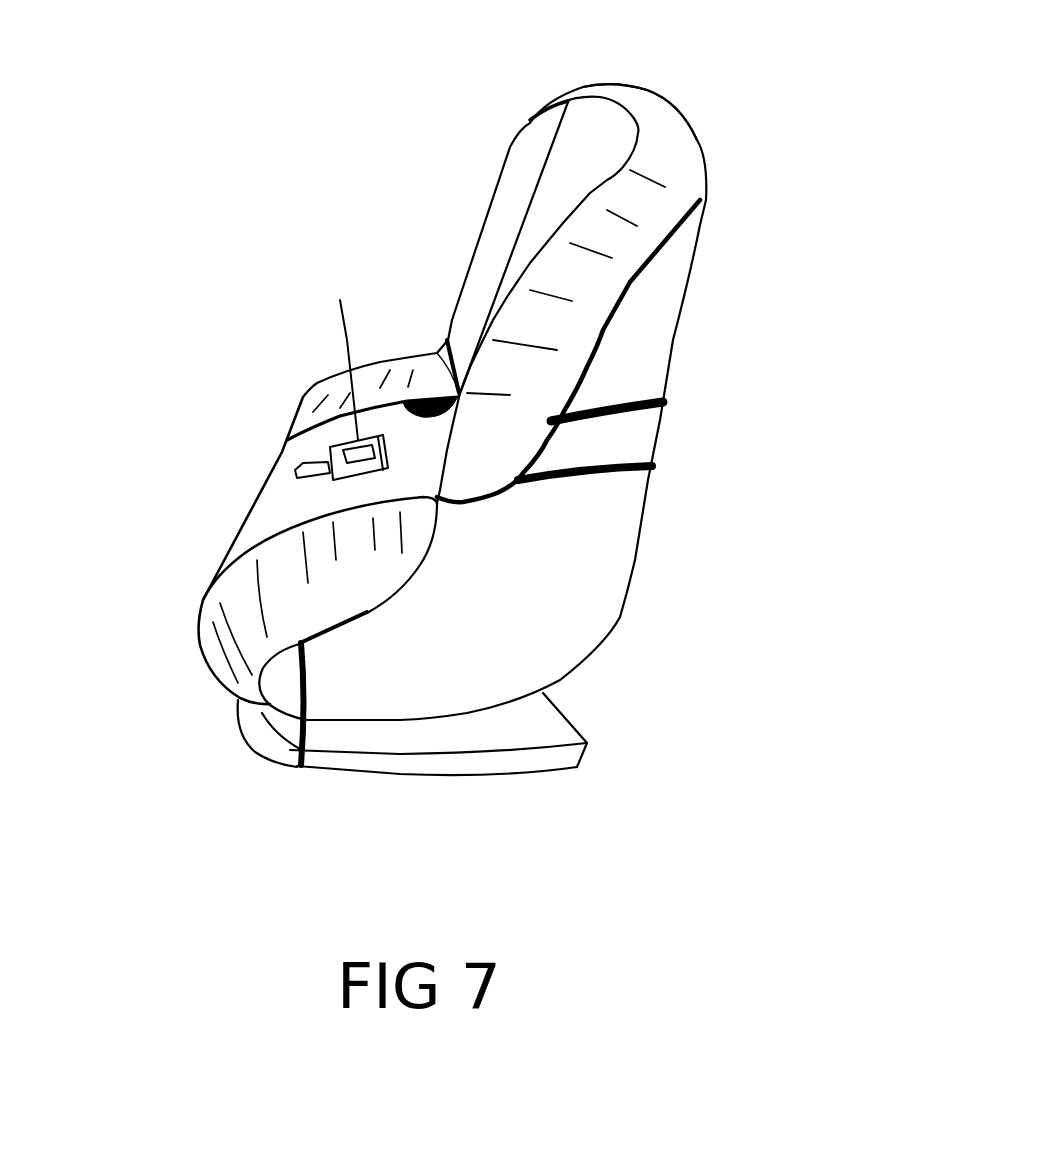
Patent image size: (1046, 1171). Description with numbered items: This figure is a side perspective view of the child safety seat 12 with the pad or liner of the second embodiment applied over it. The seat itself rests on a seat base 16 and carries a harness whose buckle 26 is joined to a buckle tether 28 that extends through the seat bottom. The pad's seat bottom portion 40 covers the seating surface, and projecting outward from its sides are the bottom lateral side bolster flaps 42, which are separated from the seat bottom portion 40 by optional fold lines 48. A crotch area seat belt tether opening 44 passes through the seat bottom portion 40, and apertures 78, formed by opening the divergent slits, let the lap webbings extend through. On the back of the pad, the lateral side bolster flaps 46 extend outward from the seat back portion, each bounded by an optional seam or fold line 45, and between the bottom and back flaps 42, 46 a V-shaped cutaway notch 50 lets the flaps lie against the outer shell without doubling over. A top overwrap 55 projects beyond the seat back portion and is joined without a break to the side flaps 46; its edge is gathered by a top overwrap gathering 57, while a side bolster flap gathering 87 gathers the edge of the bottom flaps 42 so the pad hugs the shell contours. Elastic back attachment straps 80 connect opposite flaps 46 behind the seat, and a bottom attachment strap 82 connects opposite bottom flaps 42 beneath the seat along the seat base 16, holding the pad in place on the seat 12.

The child safety seat 12 is at (740, 437).
The seat base 16 is at (268, 737).
The buckle 26 is at (336, 354).
The buckle tether 28 is at (322, 468).
The seat bottom portion 40 is at (272, 517).
The bottom lateral side bolster flaps 42 is at (323, 388).
The crotch area seat belt tether opening 44 is at (294, 470).
The seam or fold line 45 is at (548, 160).
The lateral side bolster flaps 46 is at (498, 222).
The fold lines 48 is at (282, 452).
The "V" shaped cutaway notch 50 is at (467, 541).
The top overwrap 55 is at (672, 130).
The top overwrap gathering 57 is at (657, 257).
The apertures 78 is at (420, 393).
The back attachment straps 80 is at (663, 398).
The bottom attachment strap 82 is at (301, 765).
The side bolster flap gathering 87 is at (333, 632).